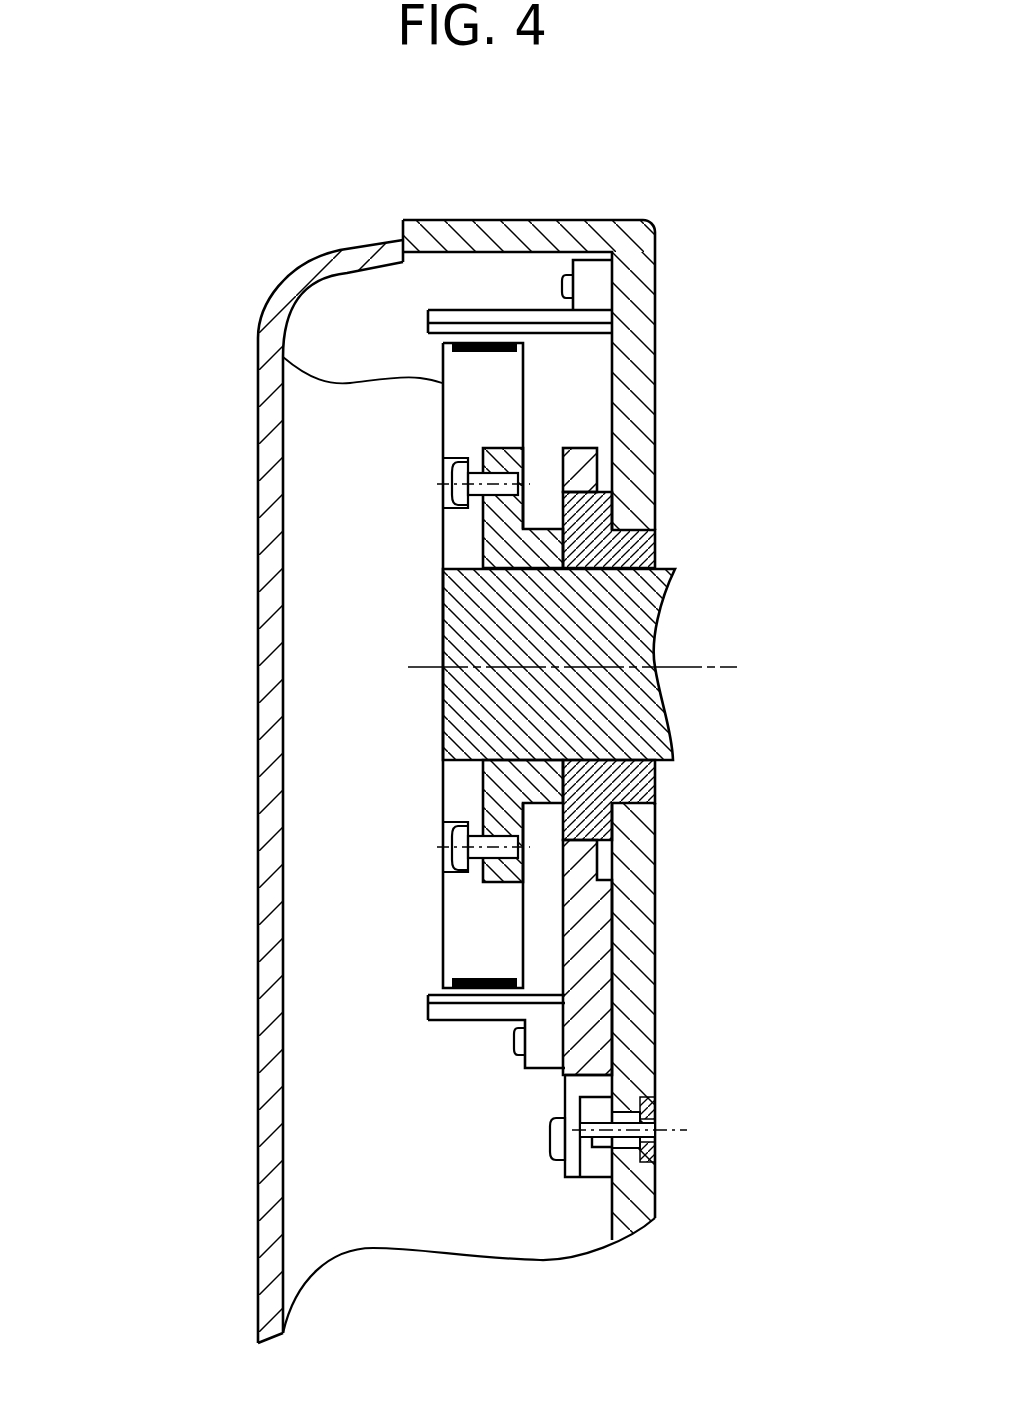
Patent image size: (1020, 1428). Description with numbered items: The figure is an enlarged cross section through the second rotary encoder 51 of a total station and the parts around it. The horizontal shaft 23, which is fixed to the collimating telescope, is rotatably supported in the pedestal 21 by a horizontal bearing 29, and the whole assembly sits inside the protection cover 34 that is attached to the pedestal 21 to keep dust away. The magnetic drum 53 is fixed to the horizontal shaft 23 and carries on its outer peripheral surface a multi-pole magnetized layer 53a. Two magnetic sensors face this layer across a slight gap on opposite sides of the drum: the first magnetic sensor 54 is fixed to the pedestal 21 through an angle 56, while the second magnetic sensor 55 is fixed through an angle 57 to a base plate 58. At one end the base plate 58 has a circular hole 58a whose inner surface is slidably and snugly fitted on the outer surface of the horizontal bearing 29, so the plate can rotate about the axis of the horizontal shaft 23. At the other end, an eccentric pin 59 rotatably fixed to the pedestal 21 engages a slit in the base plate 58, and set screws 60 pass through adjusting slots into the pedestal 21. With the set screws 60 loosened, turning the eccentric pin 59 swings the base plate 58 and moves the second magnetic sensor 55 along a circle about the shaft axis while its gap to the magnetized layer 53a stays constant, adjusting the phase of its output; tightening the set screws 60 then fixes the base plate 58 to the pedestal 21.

The pedestal 21 is at (612, 237).
The horizontal shaft 23 is at (485, 615).
The horizontal bearing 29 is at (653, 547).
The protection cover 34 is at (275, 458).
The second rotary encoder 51 is at (402, 727).
The magnetic drum 53 is at (258, 338).
The multi-pole magnetized layer 53a is at (482, 340).
The first magnetic sensor 54 is at (443, 340).
The second magnetic sensor 55 is at (433, 993).
The angle 56 is at (530, 320).
The angle 57 is at (435, 1020).
The base plate 58 is at (598, 928).
The circular hole 58a is at (580, 492).
The eccentric pin 59 is at (598, 1172).
The set screw 60 is at (545, 1150).